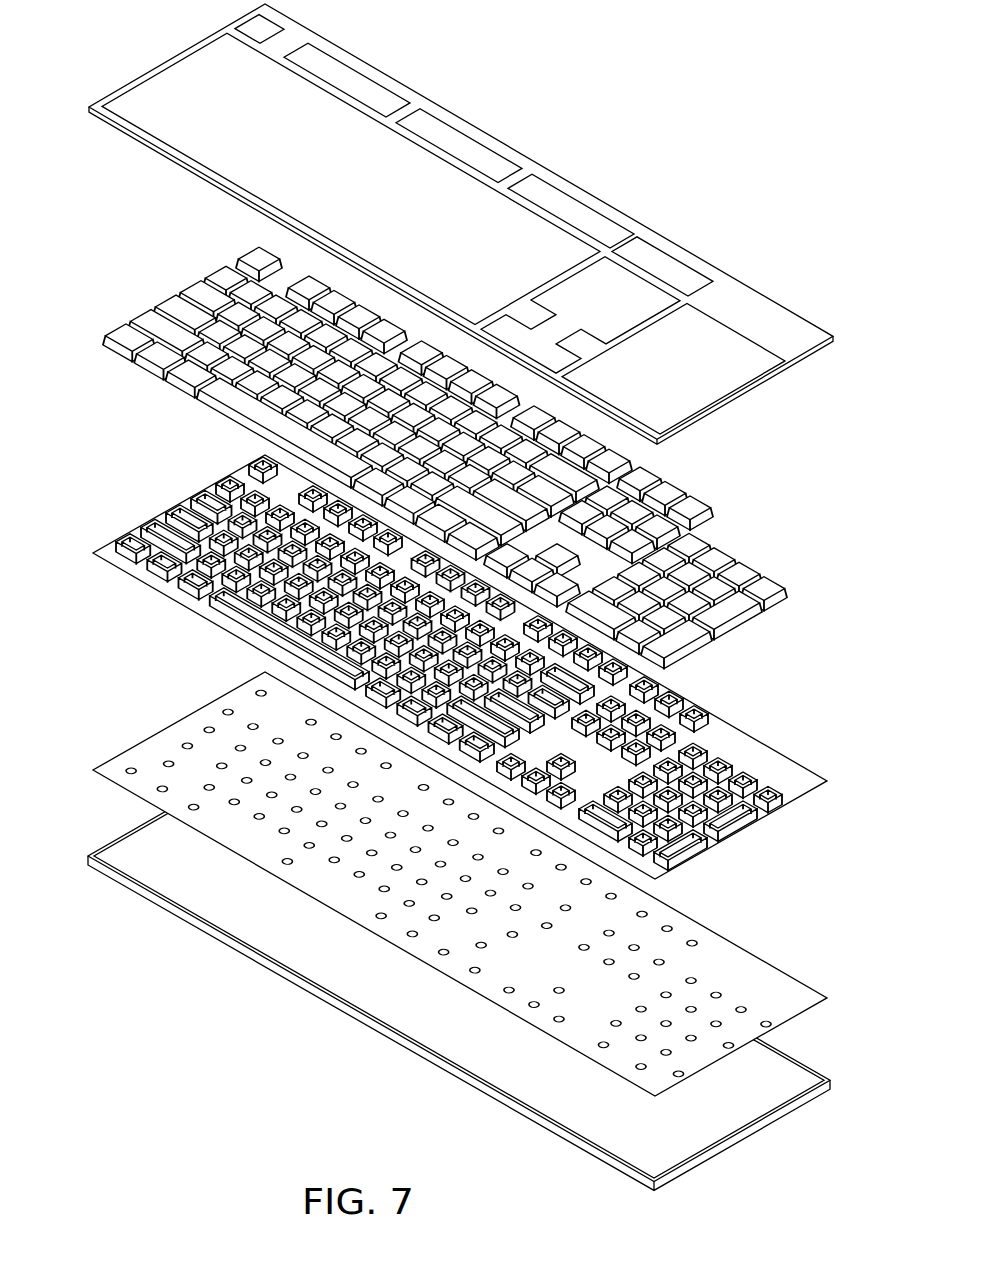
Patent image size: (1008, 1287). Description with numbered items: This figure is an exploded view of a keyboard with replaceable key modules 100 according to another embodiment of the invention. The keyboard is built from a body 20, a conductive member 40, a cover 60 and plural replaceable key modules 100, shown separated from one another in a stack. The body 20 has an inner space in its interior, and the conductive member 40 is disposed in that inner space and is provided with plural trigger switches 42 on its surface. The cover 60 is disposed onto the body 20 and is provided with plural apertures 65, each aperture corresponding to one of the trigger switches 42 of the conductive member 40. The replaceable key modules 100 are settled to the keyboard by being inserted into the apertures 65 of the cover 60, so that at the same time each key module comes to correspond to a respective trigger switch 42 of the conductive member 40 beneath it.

The body 20 is at (305, 985).
The conductive member 40 is at (133, 757).
The trigger switches 42 is at (202, 727).
The cover 60 is at (125, 550).
The apertures 65 is at (233, 500).
The replaceable key module 100 is at (224, 272).